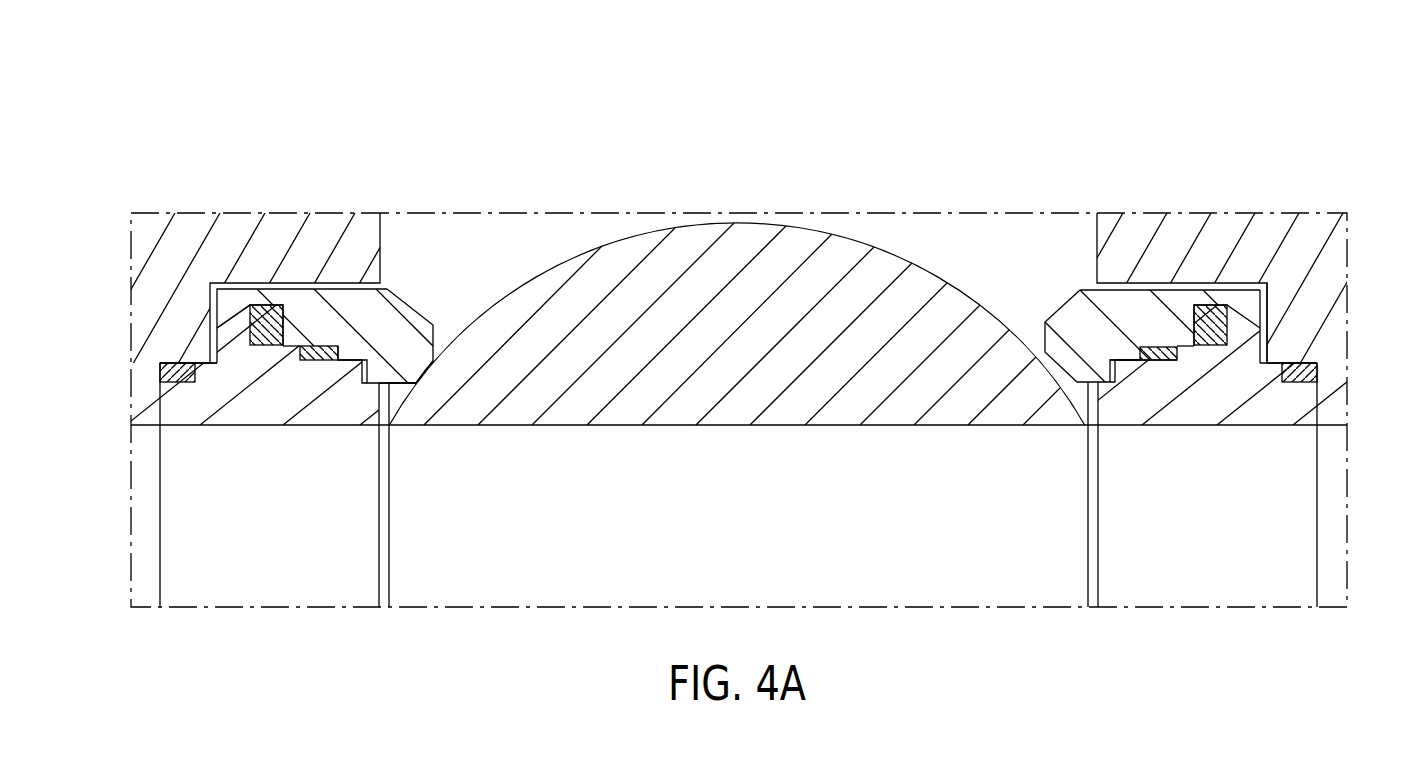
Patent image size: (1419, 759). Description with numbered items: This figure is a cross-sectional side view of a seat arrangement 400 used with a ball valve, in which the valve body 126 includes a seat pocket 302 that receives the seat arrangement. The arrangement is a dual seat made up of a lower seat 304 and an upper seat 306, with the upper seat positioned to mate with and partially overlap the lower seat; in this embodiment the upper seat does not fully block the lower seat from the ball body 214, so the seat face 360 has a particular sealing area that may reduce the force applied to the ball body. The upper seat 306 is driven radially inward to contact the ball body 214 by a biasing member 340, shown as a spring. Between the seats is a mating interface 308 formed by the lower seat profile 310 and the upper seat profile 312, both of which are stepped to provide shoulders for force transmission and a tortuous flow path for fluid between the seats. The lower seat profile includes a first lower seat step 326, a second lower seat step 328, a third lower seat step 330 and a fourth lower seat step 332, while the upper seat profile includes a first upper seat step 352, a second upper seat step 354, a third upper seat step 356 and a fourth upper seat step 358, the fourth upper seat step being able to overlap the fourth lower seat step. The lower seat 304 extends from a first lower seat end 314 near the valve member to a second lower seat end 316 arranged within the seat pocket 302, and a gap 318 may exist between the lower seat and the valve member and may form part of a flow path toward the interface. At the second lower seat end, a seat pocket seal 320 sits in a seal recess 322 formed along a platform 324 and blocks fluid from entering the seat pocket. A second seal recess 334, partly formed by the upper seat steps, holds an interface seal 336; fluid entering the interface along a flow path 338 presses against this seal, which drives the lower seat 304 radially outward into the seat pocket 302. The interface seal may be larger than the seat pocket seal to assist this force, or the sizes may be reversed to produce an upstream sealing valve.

The seat arrangement 400 is at (1258, 118).
The ball body 214 is at (717, 262).
The valve body 126 is at (1320, 306).
The seat pocket 302 is at (176, 351).
The lower seat 304 is at (222, 393).
The upper seat 306 is at (385, 306).
The mating interface 308 is at (414, 389).
The lower seat profile 310 is at (394, 397).
The upper seat profile 312 is at (222, 280).
The first lower seat end 314 is at (384, 534).
The second lower seat end 316 is at (1307, 434).
The gap 318 is at (397, 433).
The seat pocket seal 320 is at (160, 365).
The seal recess 322 is at (192, 349).
The platform 324 is at (159, 400).
The first lower seat step 326 is at (1117, 393).
The second lower seat step 328 is at (1168, 382).
The third lower seat step 330 is at (280, 358).
The fourth lower seat step 332 is at (233, 331).
The second seal recess 334 is at (339, 370).
The interface seal 336 is at (313, 361).
The flow path 338 is at (1094, 392).
The biasing member 340 is at (268, 305).
The first upper seat step 352 is at (1080, 356).
The second upper seat step 354 is at (1130, 344).
The third upper seat step 356 is at (1167, 341).
The fourth upper seat step 358 is at (1249, 281).
The seat face 360 is at (416, 382).